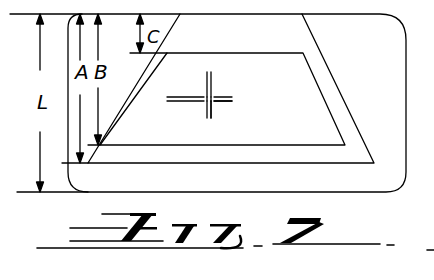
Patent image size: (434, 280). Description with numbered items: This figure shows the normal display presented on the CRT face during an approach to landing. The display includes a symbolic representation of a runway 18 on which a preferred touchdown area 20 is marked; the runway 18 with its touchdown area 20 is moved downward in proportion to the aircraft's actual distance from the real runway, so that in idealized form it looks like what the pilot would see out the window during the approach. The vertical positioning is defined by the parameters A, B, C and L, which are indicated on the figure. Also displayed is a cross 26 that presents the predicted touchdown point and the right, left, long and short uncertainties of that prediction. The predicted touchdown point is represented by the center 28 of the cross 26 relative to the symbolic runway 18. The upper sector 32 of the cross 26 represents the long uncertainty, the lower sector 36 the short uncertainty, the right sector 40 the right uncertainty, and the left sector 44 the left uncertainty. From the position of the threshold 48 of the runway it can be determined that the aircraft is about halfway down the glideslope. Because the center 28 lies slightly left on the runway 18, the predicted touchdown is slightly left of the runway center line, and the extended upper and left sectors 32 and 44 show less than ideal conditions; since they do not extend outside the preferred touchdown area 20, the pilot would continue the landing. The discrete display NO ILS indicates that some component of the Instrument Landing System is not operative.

The runway 18 is at (325, 63).
The preferred touchdown area 20 is at (328, 107).
The cross 26 is at (220, 91).
The center of the cross 28 is at (213, 103).
The upper sector 32 is at (206, 84).
The lower sector 36 is at (204, 112).
The right sector 40 is at (224, 103).
The left sector 44 is at (182, 93).
The threshold 48 is at (305, 168).